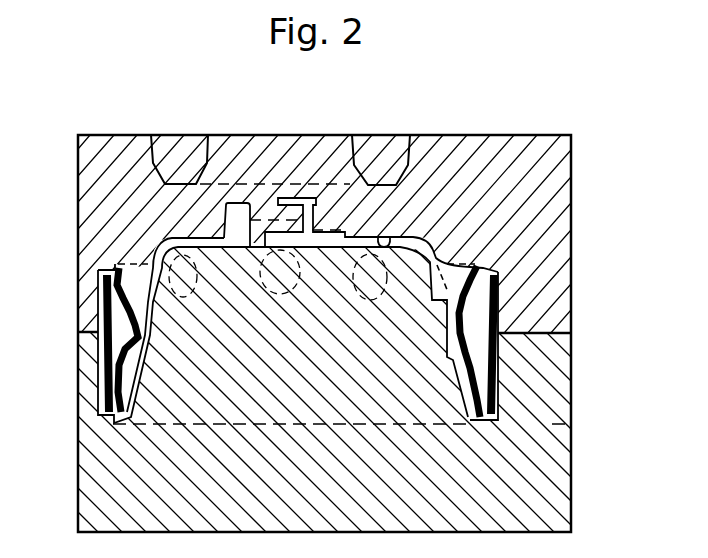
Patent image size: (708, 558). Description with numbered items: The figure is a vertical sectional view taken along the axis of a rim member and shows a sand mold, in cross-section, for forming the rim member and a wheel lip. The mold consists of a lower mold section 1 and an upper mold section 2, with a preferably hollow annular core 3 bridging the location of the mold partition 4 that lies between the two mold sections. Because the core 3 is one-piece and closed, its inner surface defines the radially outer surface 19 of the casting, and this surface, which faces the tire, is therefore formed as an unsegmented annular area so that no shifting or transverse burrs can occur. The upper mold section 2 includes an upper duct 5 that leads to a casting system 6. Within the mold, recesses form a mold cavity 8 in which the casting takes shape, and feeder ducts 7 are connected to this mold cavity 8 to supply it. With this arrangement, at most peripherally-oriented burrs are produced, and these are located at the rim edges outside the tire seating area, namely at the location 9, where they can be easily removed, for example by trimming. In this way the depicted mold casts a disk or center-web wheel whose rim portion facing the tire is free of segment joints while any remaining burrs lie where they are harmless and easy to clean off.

The lower mold section 1 is at (571, 426).
The upper mold section 2 is at (540, 198).
The hollow annular core 3 is at (450, 320).
The mold partition 4 is at (571, 333).
The upper duct 5 is at (178, 147).
The casting system 6 is at (322, 232).
The feeder ducts 7 is at (238, 218).
The mold cavity 8 is at (175, 239).
The location of peripherally-oriented burrs 9 is at (507, 443).
The radially outer surface of the casting 19 is at (452, 393).